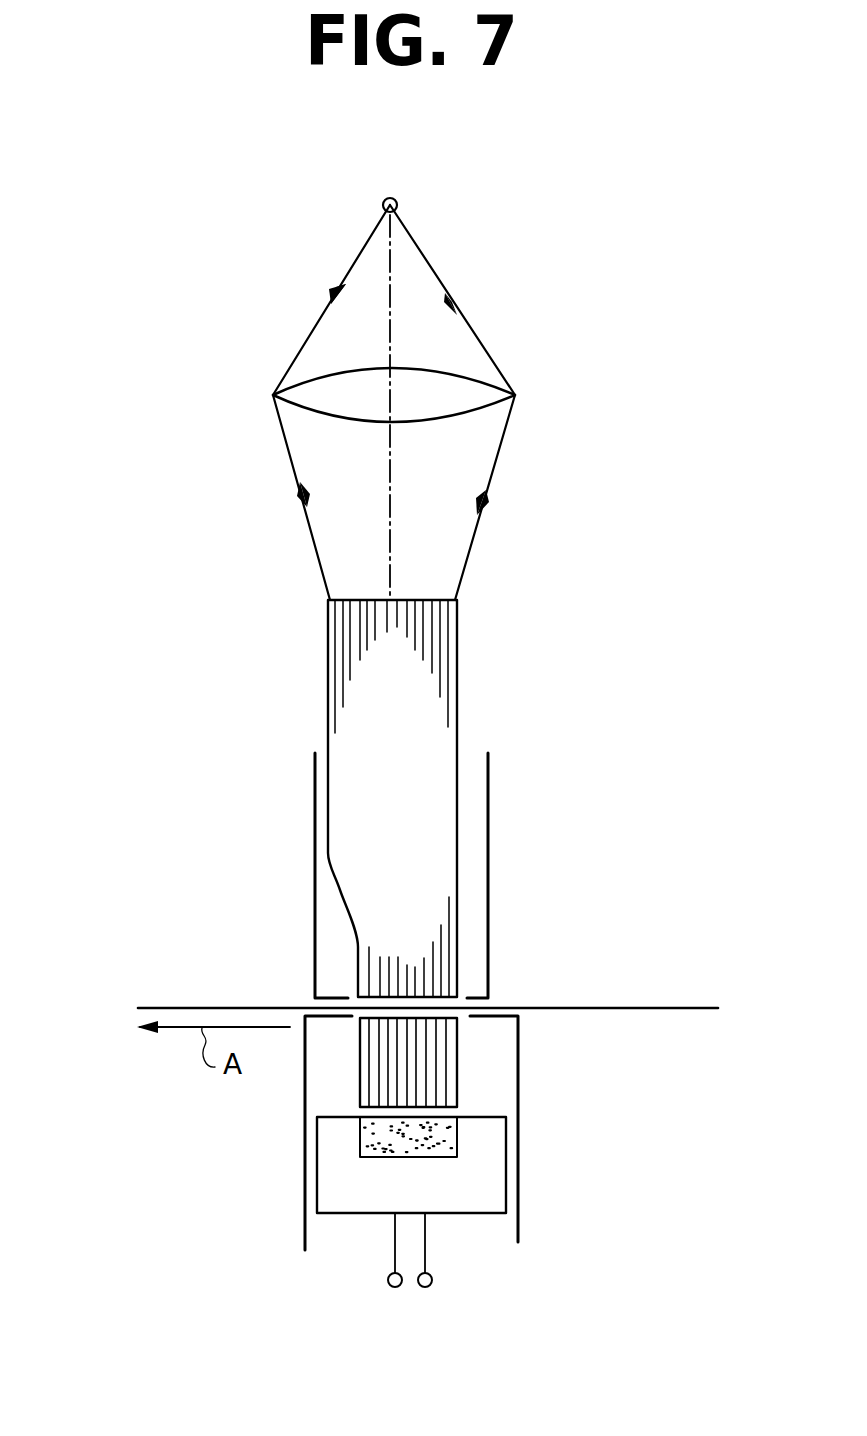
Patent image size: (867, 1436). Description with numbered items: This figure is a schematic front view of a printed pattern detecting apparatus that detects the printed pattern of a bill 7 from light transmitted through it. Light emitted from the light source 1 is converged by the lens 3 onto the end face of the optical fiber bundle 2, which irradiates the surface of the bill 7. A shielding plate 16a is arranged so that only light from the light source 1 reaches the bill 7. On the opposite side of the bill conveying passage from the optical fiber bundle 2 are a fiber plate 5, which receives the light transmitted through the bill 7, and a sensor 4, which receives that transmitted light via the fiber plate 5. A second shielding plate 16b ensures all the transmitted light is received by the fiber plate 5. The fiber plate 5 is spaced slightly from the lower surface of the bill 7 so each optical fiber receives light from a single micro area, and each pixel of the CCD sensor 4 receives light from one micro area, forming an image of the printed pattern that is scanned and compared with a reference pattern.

The light source 1 is at (398, 200).
The lens 3 is at (463, 377).
The optical fiber bundle 2 is at (458, 700).
The shielding plate 16a is at (315, 808).
The bill 7 is at (260, 1008).
The shielding plate 16b is at (303, 1173).
The fiber plate 5 is at (460, 1077).
The sensor 4 is at (472, 1213).